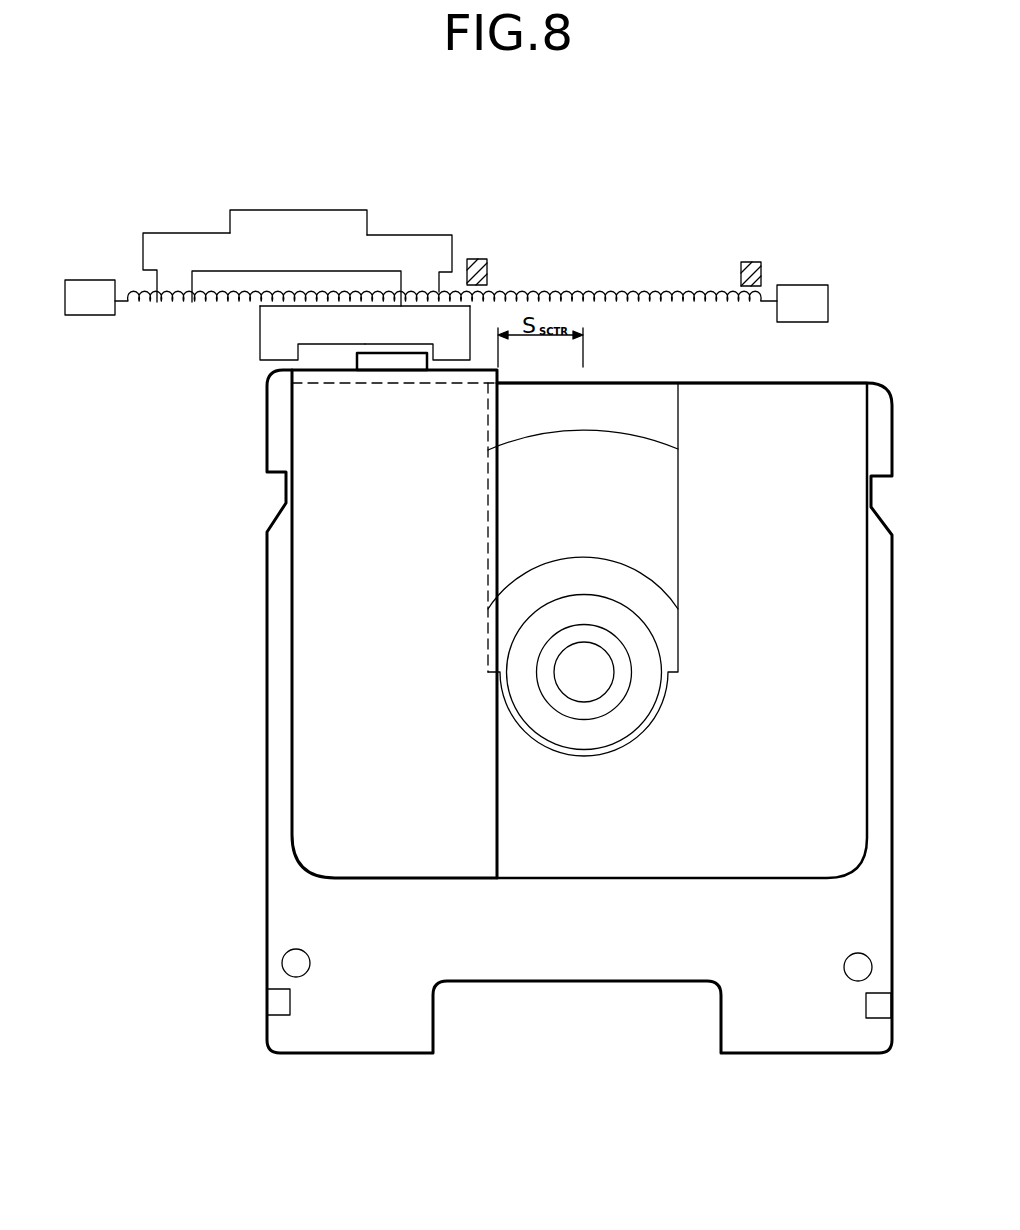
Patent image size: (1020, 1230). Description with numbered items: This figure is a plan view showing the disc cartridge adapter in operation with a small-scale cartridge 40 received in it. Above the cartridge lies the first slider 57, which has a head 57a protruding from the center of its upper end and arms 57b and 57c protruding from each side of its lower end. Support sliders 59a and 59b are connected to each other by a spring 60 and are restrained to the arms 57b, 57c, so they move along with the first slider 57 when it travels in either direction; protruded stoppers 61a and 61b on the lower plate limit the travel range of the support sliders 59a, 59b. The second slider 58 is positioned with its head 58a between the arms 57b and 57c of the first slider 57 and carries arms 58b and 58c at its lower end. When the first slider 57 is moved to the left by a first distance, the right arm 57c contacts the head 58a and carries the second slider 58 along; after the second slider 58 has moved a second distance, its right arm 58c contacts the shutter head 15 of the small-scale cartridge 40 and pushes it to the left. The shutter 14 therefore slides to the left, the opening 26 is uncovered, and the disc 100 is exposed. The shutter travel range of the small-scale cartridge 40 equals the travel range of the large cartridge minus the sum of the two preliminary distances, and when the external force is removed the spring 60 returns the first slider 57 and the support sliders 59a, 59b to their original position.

The shutter 14 is at (400, 600).
The shutter head 15 is at (355, 362).
The opening 26 is at (641, 412).
The small-scale cartridge 40 is at (934, 345).
The first slider 57 is at (297, 209).
The head 57a is at (243, 210).
The arm 57b is at (173, 276).
The right arm 57c is at (421, 286).
The second slider 58 is at (379, 259).
The head 58a is at (362, 306).
The arm 58b is at (287, 348).
The right arm 58c is at (453, 356).
The support slider 59a is at (82, 280).
The support slider 59b is at (814, 288).
The spring 60 is at (543, 302).
The stopper 61a is at (482, 259).
The stopper 61b is at (750, 262).
The disc 100 is at (545, 490).